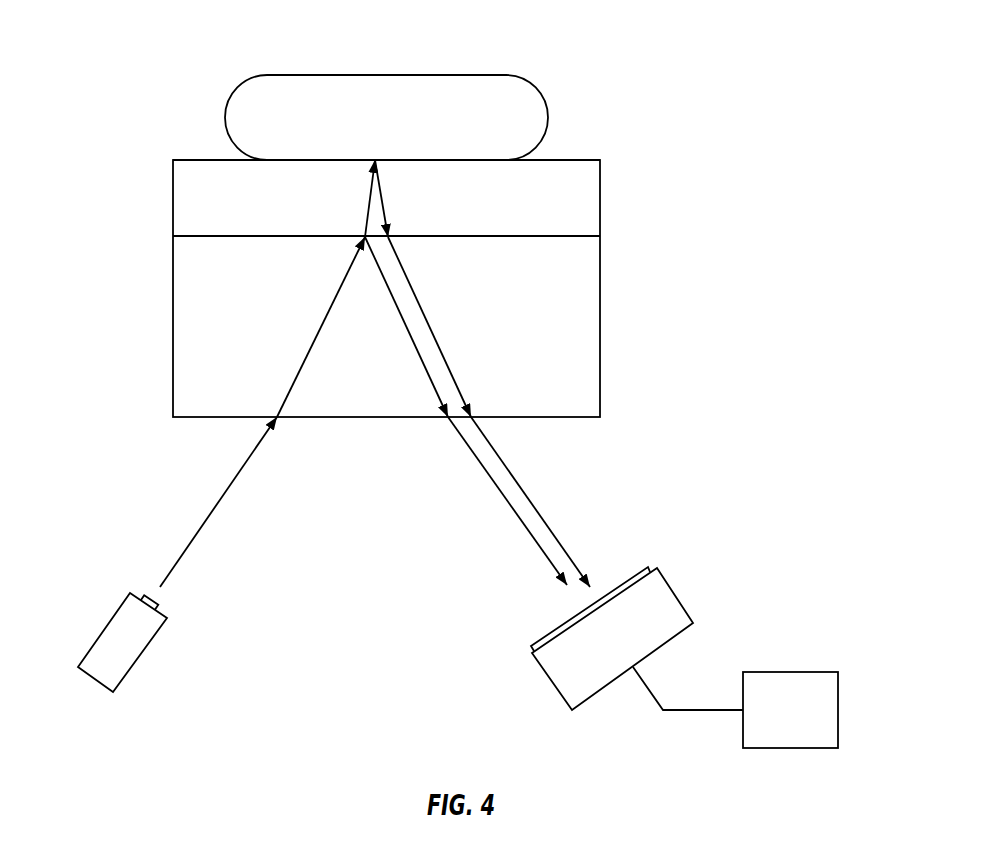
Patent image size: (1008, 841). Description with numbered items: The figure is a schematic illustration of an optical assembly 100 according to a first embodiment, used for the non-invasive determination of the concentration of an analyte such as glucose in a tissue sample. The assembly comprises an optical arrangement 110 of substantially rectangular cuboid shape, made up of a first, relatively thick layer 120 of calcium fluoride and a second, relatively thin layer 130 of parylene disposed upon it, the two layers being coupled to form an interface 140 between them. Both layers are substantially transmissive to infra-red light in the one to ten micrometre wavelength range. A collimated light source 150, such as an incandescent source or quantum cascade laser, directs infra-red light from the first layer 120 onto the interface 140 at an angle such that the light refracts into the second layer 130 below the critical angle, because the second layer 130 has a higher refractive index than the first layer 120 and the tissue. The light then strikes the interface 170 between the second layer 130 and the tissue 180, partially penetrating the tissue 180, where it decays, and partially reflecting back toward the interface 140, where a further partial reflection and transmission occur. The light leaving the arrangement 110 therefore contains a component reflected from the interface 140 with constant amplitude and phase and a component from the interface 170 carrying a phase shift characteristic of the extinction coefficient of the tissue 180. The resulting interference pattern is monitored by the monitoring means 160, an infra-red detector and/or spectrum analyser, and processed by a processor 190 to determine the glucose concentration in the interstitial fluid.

The optical assembly 100 is at (579, 44).
The optical arrangement 110 is at (617, 259).
The first layer 120 is at (527, 340).
The second layer 130 is at (527, 210).
The interface 140 is at (238, 237).
The collimated light source 150 is at (142, 655).
The monitoring means 160 is at (595, 651).
The interface 170 is at (237, 161).
The tissue 180 is at (455, 129).
The processor 190 is at (771, 723).